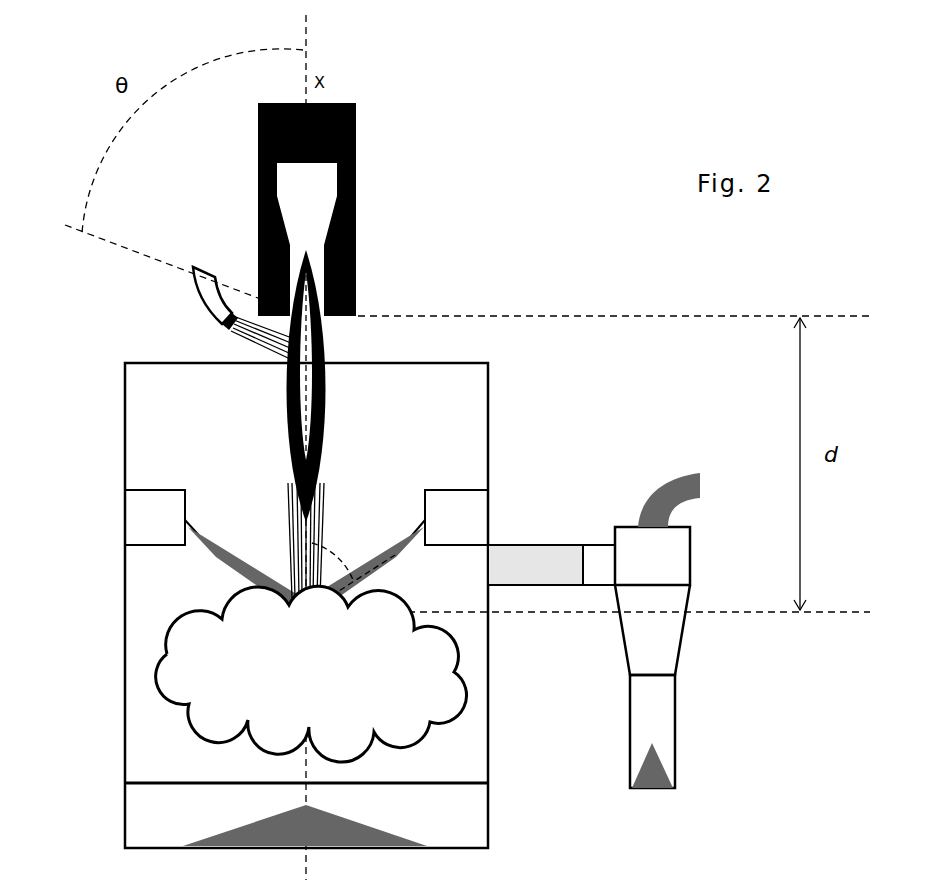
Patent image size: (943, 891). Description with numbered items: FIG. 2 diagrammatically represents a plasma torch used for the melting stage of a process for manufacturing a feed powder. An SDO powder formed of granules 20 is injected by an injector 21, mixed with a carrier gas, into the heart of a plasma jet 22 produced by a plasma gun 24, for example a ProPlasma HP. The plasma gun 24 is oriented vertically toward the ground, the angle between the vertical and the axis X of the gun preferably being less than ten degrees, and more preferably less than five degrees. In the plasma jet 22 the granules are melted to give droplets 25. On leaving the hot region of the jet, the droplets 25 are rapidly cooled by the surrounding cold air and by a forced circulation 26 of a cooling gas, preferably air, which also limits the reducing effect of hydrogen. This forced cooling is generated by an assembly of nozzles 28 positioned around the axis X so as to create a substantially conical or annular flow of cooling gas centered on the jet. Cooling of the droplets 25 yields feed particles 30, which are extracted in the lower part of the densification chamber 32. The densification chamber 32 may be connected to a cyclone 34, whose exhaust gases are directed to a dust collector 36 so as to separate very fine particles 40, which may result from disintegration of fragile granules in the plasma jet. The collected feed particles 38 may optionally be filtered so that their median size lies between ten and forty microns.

The granules 20 is at (287, 347).
The injector 21 is at (207, 313).
The plasma jet 22 is at (327, 338).
The plasma gun 24 is at (307, 209).
The droplets 25 is at (287, 528).
The forced circulation of cooling gas 26 is at (255, 586).
The assembly of nozzles 28 is at (195, 538).
The feed particles 30 is at (260, 680).
The densification chamber 32 is at (122, 720).
The cyclone 34 is at (688, 618).
The dust collector 36 is at (700, 488).
The collected feed particles 38 is at (122, 810).
The very fine particles 40 is at (652, 760).